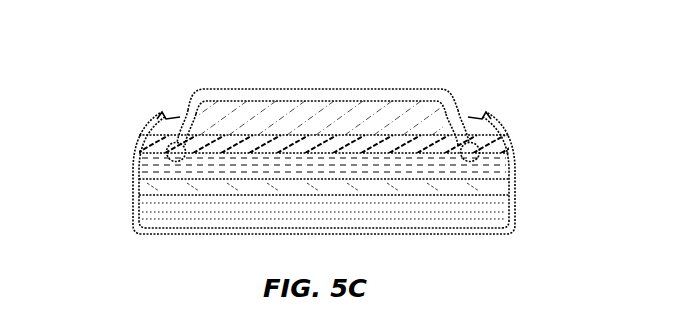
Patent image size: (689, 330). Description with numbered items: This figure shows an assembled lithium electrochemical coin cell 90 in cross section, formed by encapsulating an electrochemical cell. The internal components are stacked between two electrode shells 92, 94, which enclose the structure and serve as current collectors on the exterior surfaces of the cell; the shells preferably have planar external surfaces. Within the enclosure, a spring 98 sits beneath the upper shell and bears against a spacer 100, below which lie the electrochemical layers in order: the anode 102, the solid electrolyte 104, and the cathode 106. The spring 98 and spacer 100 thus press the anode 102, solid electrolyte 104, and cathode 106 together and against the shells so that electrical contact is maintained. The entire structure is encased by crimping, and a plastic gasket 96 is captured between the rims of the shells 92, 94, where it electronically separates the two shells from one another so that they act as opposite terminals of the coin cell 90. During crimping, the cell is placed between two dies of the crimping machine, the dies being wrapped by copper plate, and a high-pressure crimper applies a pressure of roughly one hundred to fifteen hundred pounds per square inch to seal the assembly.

The lithium electrochemical coin cell 90 is at (101, 189).
The electrode shell 92 is at (410, 88).
The electrode shell 94 is at (173, 235).
The plastic gasket 96 is at (173, 113).
The spring 98 is at (335, 113).
The spacer 100 is at (460, 108).
The anode 102 is at (497, 155).
The solid electrolyte 104 is at (498, 192).
The cathode 106 is at (493, 222).